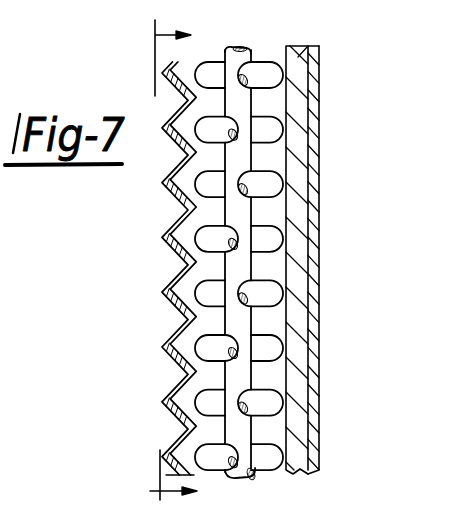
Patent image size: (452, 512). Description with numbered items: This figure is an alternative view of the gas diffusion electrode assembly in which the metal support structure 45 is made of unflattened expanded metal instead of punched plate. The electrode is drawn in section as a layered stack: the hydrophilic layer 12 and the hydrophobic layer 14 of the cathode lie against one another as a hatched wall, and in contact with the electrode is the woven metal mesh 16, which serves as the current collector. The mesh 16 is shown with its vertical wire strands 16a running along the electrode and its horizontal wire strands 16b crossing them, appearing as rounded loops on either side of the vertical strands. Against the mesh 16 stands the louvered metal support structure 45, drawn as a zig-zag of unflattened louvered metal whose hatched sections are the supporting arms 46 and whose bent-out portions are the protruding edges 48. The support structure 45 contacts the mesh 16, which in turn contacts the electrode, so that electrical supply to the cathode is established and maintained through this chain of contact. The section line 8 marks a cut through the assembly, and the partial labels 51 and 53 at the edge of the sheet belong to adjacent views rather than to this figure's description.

The section line 8- 8 is at (162, 260).
The hydrophilic layer 12 is at (289, 46).
The hydrophobic layer 14 is at (318, 54).
The metal mesh 16 is at (240, 42).
The vertical wire strands 16a is at (172, 338).
The horizontal wire strands 16b is at (206, 400).
The metal support structure 45 is at (158, 205).
The supporting arms 46 is at (166, 277).
The protruding edges 48 is at (168, 330).
The partial reference (adjacent figure) 51 is at (28, 482).
The partial reference (adjacent figure) 53 is at (119, 511).